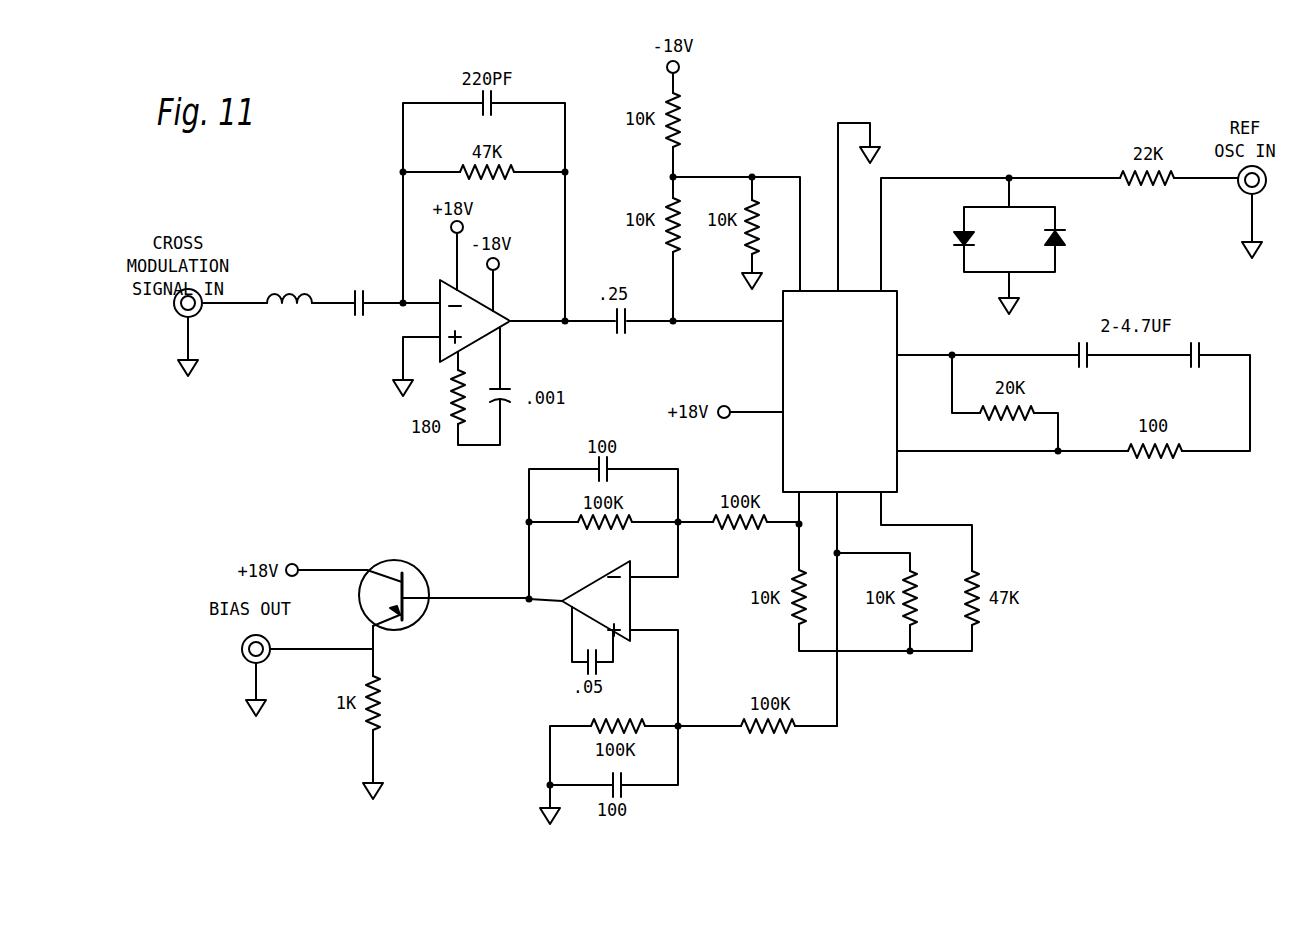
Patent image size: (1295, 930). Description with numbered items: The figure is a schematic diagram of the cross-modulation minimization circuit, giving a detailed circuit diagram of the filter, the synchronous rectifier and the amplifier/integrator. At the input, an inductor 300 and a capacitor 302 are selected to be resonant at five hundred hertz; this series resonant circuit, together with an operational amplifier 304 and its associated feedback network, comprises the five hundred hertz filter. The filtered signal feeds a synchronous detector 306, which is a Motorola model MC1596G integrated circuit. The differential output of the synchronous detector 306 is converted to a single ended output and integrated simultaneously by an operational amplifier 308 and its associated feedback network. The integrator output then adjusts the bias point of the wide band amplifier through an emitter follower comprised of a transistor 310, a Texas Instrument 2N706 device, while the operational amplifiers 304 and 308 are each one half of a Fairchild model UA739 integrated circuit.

The inductor 300 is at (292, 287).
The capacitor 302 is at (356, 292).
The operational amplifier 304 is at (492, 321).
The synchronous detector 306 is at (898, 332).
The operational amplifier 308 is at (632, 604).
The transistor 310 is at (413, 578).